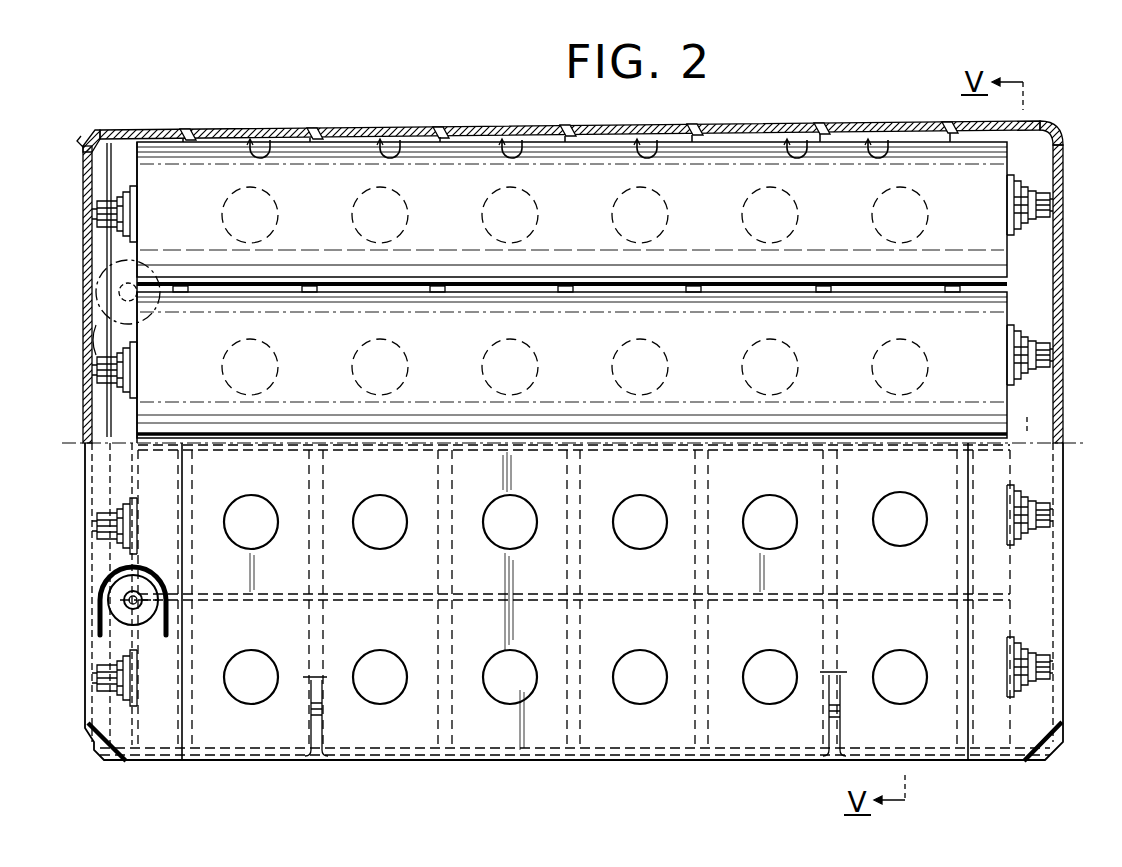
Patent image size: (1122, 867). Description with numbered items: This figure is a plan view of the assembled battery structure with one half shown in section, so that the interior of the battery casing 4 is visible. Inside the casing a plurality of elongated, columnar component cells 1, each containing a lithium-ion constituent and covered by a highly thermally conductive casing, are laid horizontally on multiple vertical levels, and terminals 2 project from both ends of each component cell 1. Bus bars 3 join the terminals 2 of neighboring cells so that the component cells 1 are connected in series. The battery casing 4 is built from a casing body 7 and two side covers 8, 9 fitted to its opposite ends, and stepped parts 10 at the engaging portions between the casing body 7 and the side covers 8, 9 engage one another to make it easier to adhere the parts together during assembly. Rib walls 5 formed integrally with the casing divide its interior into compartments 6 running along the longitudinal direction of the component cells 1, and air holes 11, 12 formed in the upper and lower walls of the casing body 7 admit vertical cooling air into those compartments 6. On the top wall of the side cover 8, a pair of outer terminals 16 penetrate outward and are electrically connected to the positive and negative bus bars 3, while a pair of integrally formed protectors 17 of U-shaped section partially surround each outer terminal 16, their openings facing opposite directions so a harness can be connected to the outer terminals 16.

The component cell 1 is at (776, 146).
The terminal 2 is at (97, 212).
The bus bar 3 is at (107, 250).
The battery casing 4 is at (728, 124).
The rib wall 5 is at (183, 143).
The compartment 6 is at (117, 149).
The casing body 7 is at (610, 126).
The side cover 8 is at (95, 342).
The side cover 9 is at (1064, 296).
The stepped part 10 is at (188, 131).
The air hole 11 is at (270, 542).
The air hole 12 is at (355, 230).
The outer terminal 16 is at (122, 292).
The protector 17 is at (98, 312).